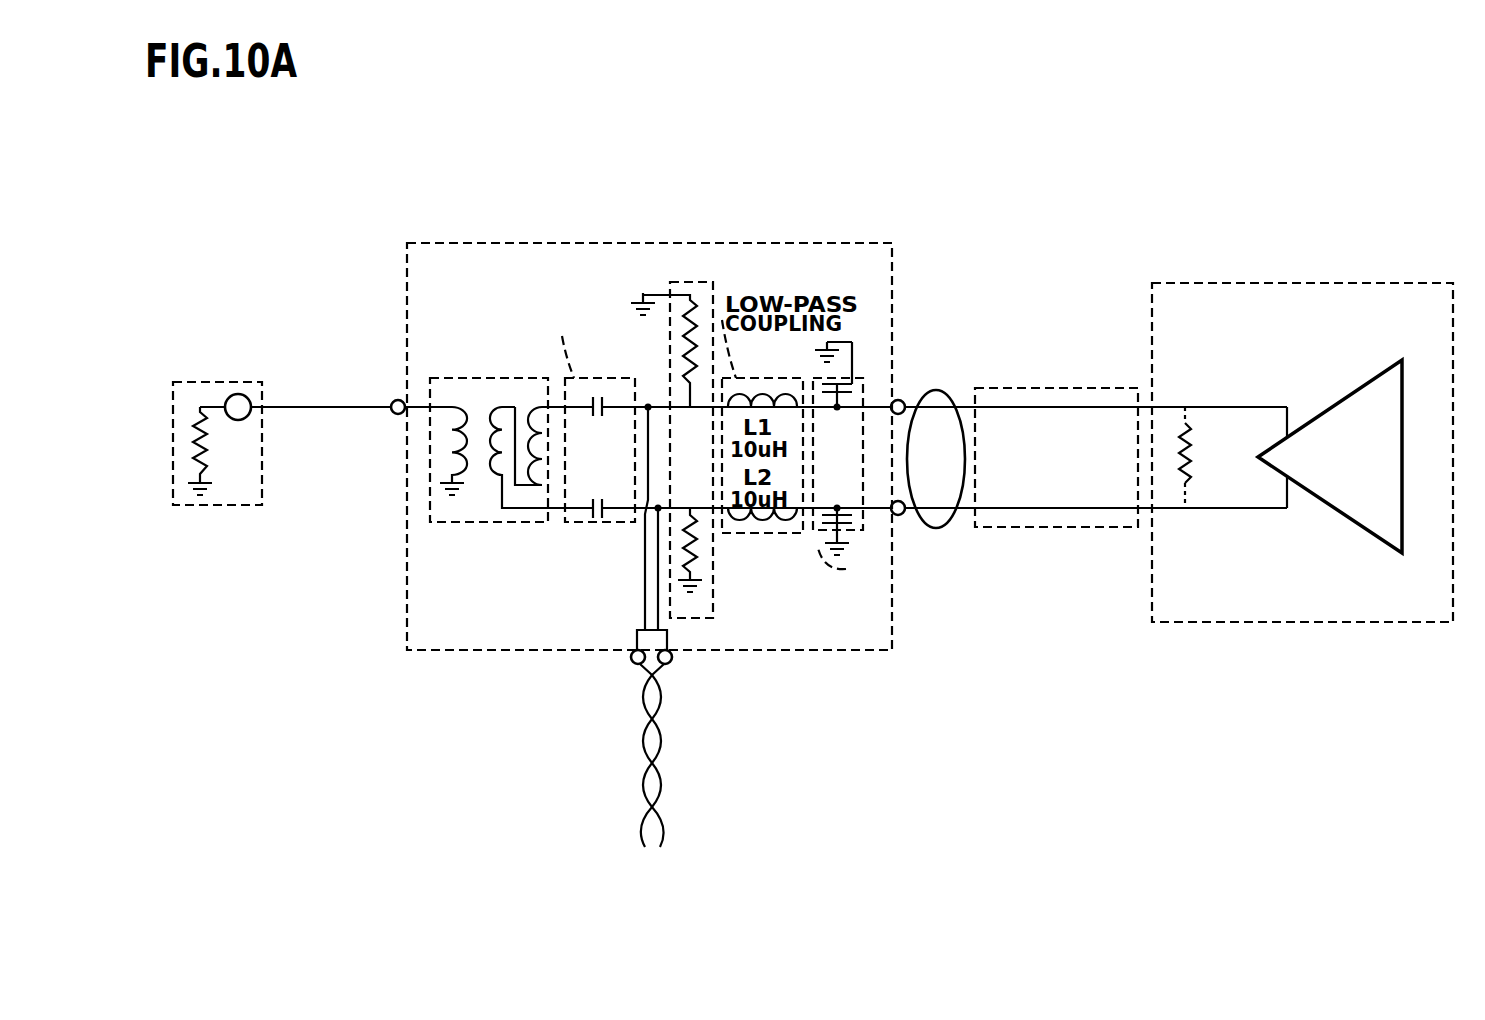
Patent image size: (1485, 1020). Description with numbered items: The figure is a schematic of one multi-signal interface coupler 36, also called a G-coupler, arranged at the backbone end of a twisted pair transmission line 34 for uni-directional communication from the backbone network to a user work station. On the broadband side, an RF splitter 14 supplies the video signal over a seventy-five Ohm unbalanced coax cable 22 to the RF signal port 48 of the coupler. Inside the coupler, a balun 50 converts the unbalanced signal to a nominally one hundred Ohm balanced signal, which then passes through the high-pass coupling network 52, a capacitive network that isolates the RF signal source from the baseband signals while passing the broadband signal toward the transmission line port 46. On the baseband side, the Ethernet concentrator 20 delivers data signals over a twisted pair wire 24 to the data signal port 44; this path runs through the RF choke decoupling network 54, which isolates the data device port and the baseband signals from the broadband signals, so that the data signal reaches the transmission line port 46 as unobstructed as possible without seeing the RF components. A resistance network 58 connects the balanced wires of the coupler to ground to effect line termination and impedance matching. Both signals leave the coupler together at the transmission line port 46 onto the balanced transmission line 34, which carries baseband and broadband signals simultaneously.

The RF splitter 14 is at (200, 505).
The coax (RG-59) cable 22 is at (289, 407).
The RF signal port 48 is at (391, 411).
The multi-signal interface coupler 36 is at (894, 650).
The balun 50 is at (480, 523).
The high-pass coupling network 52 is at (565, 523).
The resistance network 58 is at (714, 294).
The RF choke decoupling network 54 is at (852, 537).
The data signal port 44 is at (922, 390).
The twisted pair wire 24 is at (1096, 436).
The Ethernet concentrator 20 is at (1151, 623).
The transmission line port 46 is at (632, 659).
The transmission line 34 is at (516, 757).